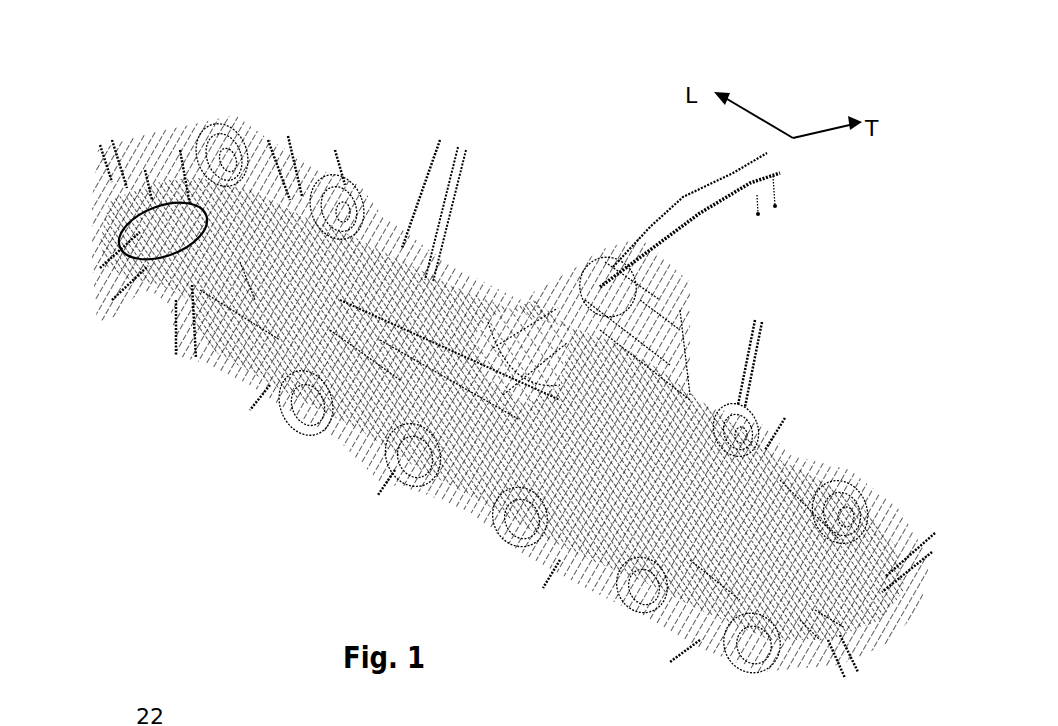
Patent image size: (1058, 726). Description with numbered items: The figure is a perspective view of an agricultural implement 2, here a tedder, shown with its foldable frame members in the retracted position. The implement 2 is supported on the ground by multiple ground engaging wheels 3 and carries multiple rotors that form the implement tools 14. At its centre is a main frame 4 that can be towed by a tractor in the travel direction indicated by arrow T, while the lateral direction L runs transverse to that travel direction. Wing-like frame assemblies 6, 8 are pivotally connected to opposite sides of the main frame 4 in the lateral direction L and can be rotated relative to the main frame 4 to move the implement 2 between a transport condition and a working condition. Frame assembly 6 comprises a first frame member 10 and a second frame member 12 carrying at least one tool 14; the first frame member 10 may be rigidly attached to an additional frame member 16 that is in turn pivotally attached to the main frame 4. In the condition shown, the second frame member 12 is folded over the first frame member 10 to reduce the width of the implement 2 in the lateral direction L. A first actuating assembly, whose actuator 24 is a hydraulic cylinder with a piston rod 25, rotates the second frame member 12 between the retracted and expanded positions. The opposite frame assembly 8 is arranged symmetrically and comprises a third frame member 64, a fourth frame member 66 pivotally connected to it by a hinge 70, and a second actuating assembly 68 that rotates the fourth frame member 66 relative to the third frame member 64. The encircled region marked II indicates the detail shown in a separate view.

The agricultural implement 2 is at (584, 194).
The ground engaging wheels 3 is at (218, 138).
The central main frame 4 is at (500, 423).
The wing-like frame assembly 6 is at (153, 375).
The wing-like frame assembly 8 is at (588, 600).
The first frame member 10 is at (252, 278).
The second frame member 12 is at (173, 217).
The implement tools 14 is at (182, 175).
The additional frame member 16 is at (353, 340).
The actuator 24 is at (393, 328).
The piston rod 25 is at (248, 265).
The third frame member 64 is at (704, 552).
The fourth frame member 66 is at (752, 540).
The second actuating assembly 68 is at (810, 652).
The hinge 70 is at (828, 620).
The detail view II is at (122, 243).